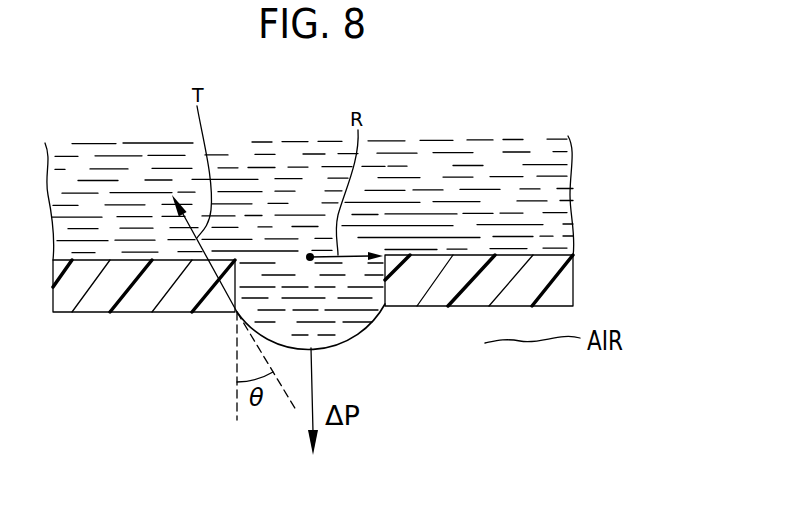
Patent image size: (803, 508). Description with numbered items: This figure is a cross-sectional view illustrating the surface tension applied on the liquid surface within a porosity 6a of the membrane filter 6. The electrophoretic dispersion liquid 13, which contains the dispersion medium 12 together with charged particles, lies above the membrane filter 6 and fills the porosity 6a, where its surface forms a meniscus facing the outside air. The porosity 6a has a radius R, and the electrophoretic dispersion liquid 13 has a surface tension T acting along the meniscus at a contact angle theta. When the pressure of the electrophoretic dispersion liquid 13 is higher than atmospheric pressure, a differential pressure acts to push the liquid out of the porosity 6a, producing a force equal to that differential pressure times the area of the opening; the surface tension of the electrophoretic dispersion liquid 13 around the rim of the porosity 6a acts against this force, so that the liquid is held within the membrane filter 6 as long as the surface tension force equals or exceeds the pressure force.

The dispersion medium 12 is at (557, 191).
The electrophoretic dispersion liquid 13 is at (369, 235).
The membrane filter 6 is at (558, 284).
The porosity 6a is at (386, 290).